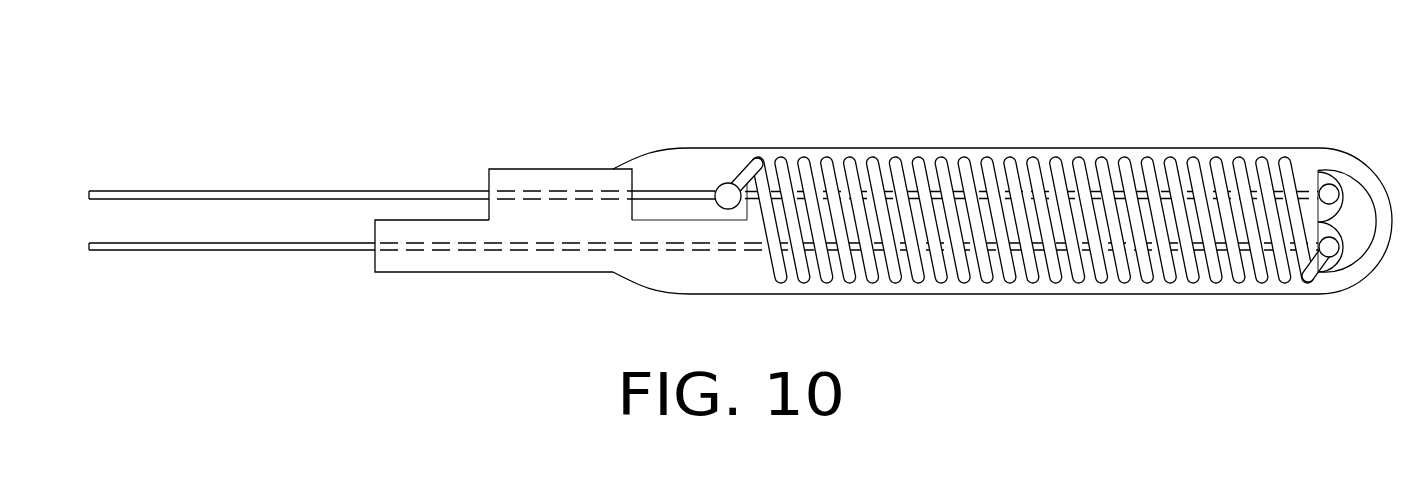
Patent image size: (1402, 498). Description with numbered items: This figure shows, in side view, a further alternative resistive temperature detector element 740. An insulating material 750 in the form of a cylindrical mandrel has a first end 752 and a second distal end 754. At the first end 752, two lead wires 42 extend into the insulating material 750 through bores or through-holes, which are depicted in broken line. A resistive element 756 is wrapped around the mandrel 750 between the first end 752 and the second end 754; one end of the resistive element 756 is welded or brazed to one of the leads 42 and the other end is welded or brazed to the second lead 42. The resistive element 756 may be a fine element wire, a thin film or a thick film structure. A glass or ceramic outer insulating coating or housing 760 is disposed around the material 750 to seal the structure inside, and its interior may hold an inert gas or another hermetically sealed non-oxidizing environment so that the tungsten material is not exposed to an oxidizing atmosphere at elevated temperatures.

The lead wires 42 is at (289, 193).
The resistive temperature detector element 740 is at (1002, 194).
The insulating material 750 is at (548, 266).
The first end 752 is at (489, 183).
The second distal end 754 is at (1384, 192).
The resistive element 756 is at (1011, 277).
The outer insulating coating or housing 760 is at (997, 147).